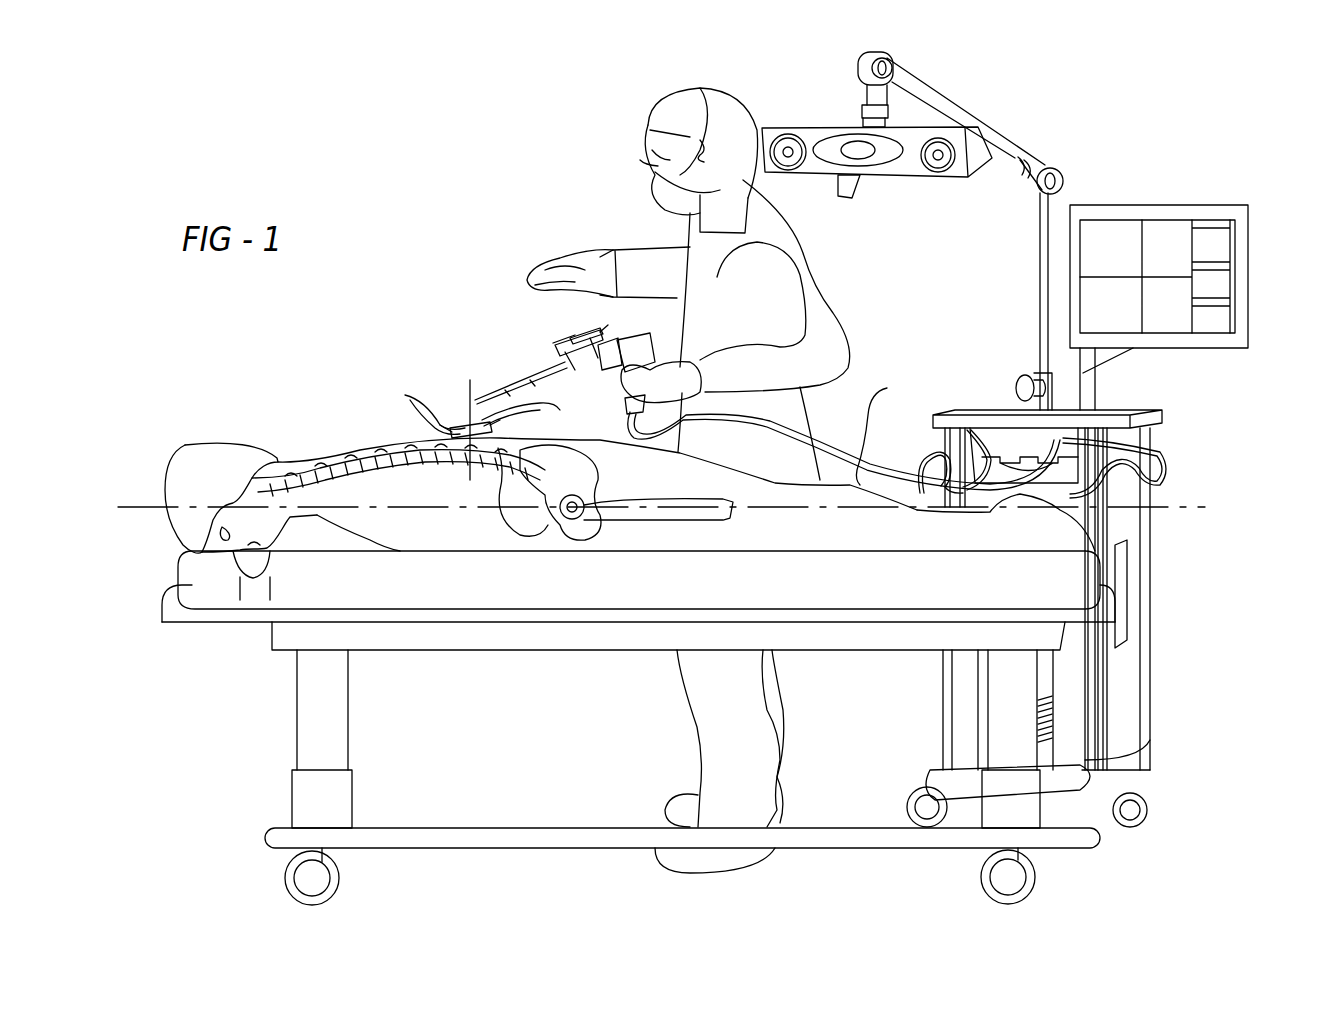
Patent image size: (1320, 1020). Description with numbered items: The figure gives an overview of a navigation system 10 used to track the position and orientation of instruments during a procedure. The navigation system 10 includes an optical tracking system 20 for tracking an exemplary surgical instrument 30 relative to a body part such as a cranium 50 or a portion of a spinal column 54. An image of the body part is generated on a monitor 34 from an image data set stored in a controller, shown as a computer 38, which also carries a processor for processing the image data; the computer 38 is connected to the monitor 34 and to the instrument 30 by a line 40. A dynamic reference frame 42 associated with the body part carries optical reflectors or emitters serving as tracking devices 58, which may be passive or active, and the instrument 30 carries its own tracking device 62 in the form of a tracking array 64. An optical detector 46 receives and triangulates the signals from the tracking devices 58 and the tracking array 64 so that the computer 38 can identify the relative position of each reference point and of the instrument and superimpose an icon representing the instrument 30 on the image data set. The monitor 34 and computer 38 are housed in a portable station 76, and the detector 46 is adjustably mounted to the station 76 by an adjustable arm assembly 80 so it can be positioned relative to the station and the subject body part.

The navigation system 10 is at (1085, 128).
The optical tracking system 20 is at (875, 125).
The surgical instrument 30 is at (757, 361).
The monitor 34 is at (1185, 205).
The computer 38 is at (1060, 440).
The line 40 is at (887, 388).
The dynamic reference frame 42 is at (470, 400).
The optical detector 46 is at (795, 128).
The cranium 50 is at (230, 443).
The spinal column 54 is at (392, 455).
The tracking devices 58 is at (480, 412).
The tracking device 62 is at (548, 328).
The tracking array 64 is at (582, 333).
The portable station 76 is at (1185, 545).
The adjustable arm assembly 80 is at (1003, 92).